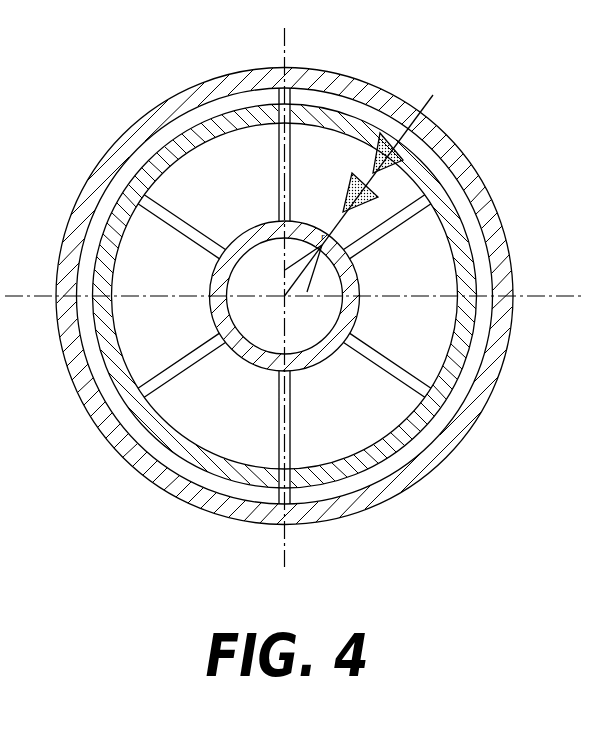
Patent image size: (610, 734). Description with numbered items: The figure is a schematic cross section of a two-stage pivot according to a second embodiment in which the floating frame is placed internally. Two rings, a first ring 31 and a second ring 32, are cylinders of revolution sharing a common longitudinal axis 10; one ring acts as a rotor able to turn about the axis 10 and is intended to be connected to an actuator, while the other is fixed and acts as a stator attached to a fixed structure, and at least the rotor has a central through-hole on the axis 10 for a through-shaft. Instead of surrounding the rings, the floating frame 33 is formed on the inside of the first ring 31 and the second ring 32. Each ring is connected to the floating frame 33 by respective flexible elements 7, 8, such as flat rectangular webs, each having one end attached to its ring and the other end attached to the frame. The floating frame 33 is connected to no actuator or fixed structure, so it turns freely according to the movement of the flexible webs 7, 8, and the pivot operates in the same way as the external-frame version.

The flexible element 7 is at (290, 150).
The flexible element 8 is at (150, 193).
The longitudinal axis 10 is at (284, 296).
The first ring 31 is at (463, 413).
The second ring 32 is at (210, 468).
The floating frame 33 is at (308, 360).